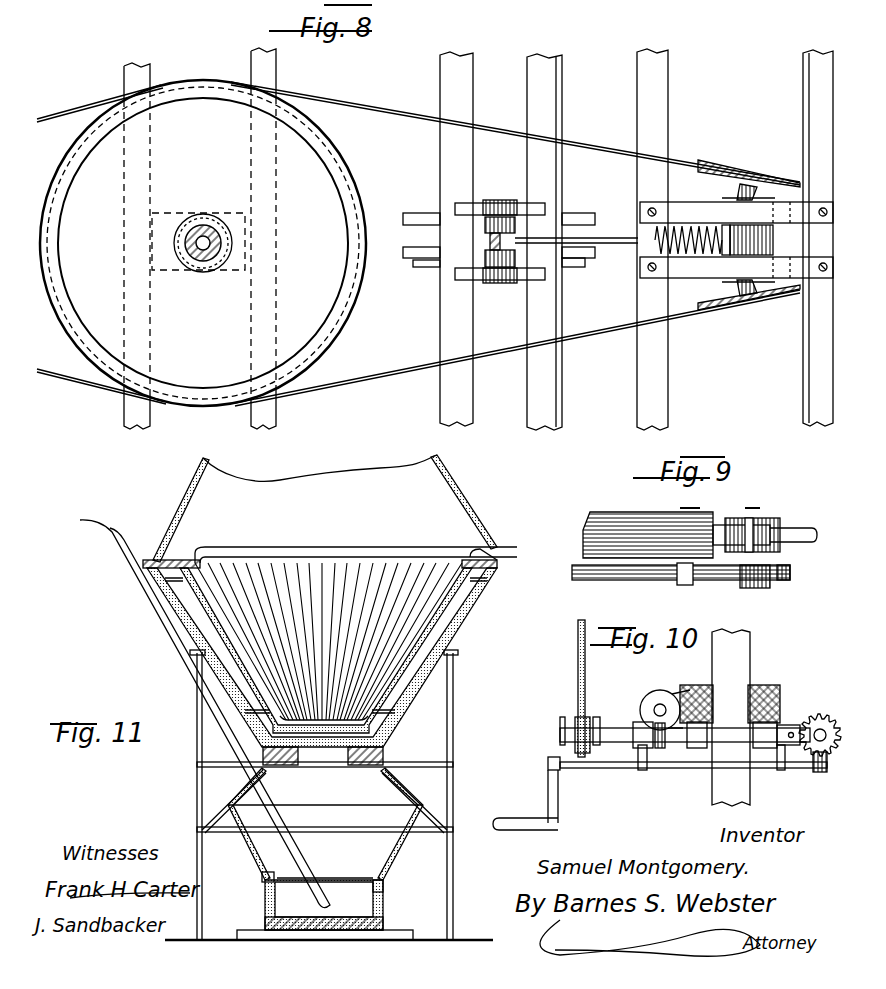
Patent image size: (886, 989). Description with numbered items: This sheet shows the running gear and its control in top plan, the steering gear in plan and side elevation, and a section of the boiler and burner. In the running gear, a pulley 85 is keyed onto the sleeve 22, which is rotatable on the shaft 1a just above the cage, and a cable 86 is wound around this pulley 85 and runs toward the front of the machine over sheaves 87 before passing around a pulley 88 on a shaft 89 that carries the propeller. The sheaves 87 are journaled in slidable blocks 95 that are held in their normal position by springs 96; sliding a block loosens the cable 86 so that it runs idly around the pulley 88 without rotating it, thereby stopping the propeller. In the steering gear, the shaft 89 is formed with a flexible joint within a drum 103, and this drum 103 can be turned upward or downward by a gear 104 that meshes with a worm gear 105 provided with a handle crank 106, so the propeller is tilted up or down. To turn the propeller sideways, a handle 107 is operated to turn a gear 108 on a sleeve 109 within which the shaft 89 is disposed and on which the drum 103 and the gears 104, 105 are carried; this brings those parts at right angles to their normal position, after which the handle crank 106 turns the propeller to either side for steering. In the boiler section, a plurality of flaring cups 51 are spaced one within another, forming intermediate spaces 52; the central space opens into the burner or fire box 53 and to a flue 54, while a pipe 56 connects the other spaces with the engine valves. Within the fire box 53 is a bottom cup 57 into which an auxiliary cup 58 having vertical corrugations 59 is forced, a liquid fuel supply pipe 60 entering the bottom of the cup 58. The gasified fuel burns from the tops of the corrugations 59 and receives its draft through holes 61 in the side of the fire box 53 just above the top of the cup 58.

In FIG. 8, the shaft 1a is at (203, 224).
In FIG. 8, the sleeve 22 is at (203, 266).
In FIG. 8, the pulley 85 is at (337, 300).
In FIG. 8, the cable 86 is at (392, 112).
In FIG. 10, the cable 86 is at (578, 668).
In FIG. 8, the sheaves 87 is at (717, 160).
In FIG. 8, the slidable blocks 95 is at (760, 256).
In FIG. 8, the springs 96 is at (648, 259).
In FIG. 11, the flaring cups 51 is at (487, 590).
In FIG. 11, the intermediate spaces 52 is at (467, 603).
In FIG. 11, the burner or fire box 53 is at (422, 807).
In FIG. 11, the flue 54 is at (185, 492).
In FIG. 11, the pipe 56 is at (340, 545).
In FIG. 11, the bottom cup 57 is at (386, 899).
In FIG. 11, the auxiliary cup 58 is at (332, 876).
In FIG. 11, the vertical corrugations 59 is at (378, 880).
In FIG. 11, the fuel supply pipe 60 is at (143, 600).
In FIG. 11, the holes 61 is at (261, 875).
In FIG. 9, the shaft 89 is at (797, 533).
In FIG. 10, the shaft 89 is at (607, 727).
In FIG. 9, the drum 103 is at (777, 515).
In FIG. 9, the gear 104 is at (788, 581).
In FIG. 10, the gear 104 is at (819, 712).
In FIG. 9, the worm gear 105 is at (747, 590).
In FIG. 10, the worm gear 105 is at (818, 774).
In FIG. 10, the handle crank 106 is at (530, 816).
In FIG. 10, the handle 107 is at (655, 700).
In FIG. 10, the gear 108 is at (660, 750).
In FIG. 9, the sleeve 109 is at (600, 530).
In FIG. 10, the sleeve 109 is at (730, 730).
In FIG. 10, the pulley 88 is at (583, 760).